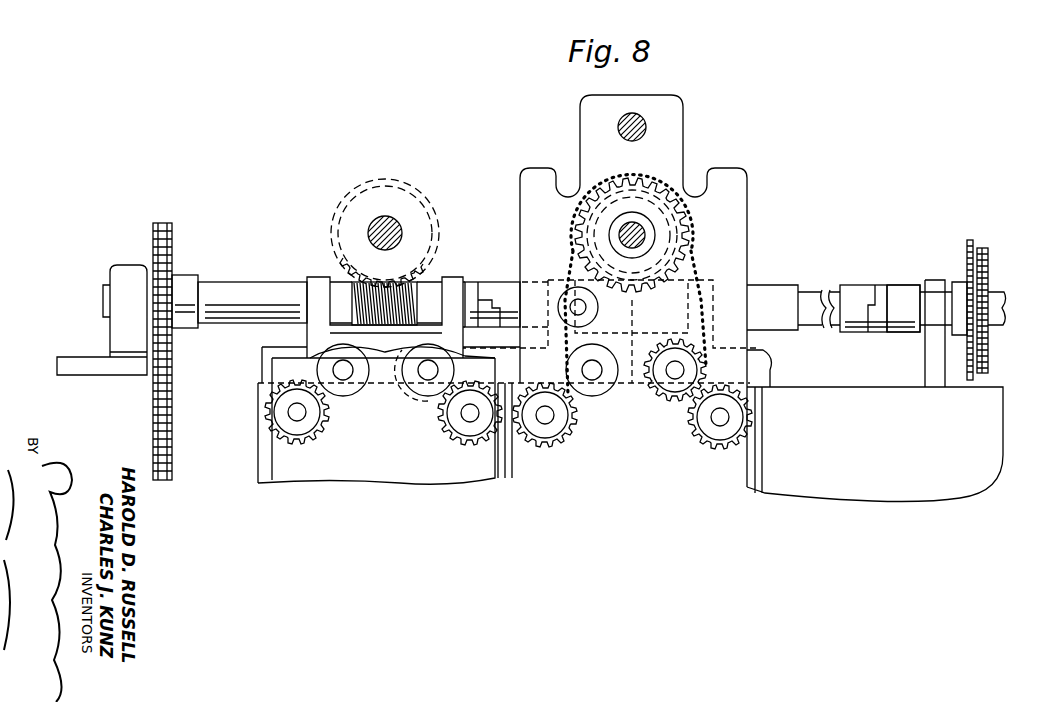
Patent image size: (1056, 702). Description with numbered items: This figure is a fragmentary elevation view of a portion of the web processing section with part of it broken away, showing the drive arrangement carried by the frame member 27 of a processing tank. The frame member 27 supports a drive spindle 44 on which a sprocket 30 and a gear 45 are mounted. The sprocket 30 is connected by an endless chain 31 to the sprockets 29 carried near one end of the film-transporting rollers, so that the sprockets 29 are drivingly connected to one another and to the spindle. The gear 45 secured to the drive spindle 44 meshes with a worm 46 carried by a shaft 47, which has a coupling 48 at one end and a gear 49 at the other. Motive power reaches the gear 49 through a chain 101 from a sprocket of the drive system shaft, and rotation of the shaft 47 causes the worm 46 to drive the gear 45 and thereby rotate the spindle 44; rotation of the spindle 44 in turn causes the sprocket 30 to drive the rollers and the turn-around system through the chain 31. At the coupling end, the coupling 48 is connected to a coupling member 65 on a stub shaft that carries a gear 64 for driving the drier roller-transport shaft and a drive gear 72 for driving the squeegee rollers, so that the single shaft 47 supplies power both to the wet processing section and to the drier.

The frame member 27 is at (748, 228).
The sprockets 29 is at (325, 430).
The sprocket 30 is at (653, 208).
The endless chain 31 is at (563, 262).
The drive spindle 44 is at (368, 226).
The gear 45 is at (383, 203).
The worm 46 is at (420, 282).
The shaft 47 is at (249, 291).
The coupling 48 is at (855, 287).
The gear 49 is at (174, 262).
The gear 64 is at (982, 248).
The coupling member 65 is at (902, 287).
The drive gear 72 is at (970, 240).
The chain 101 is at (172, 446).